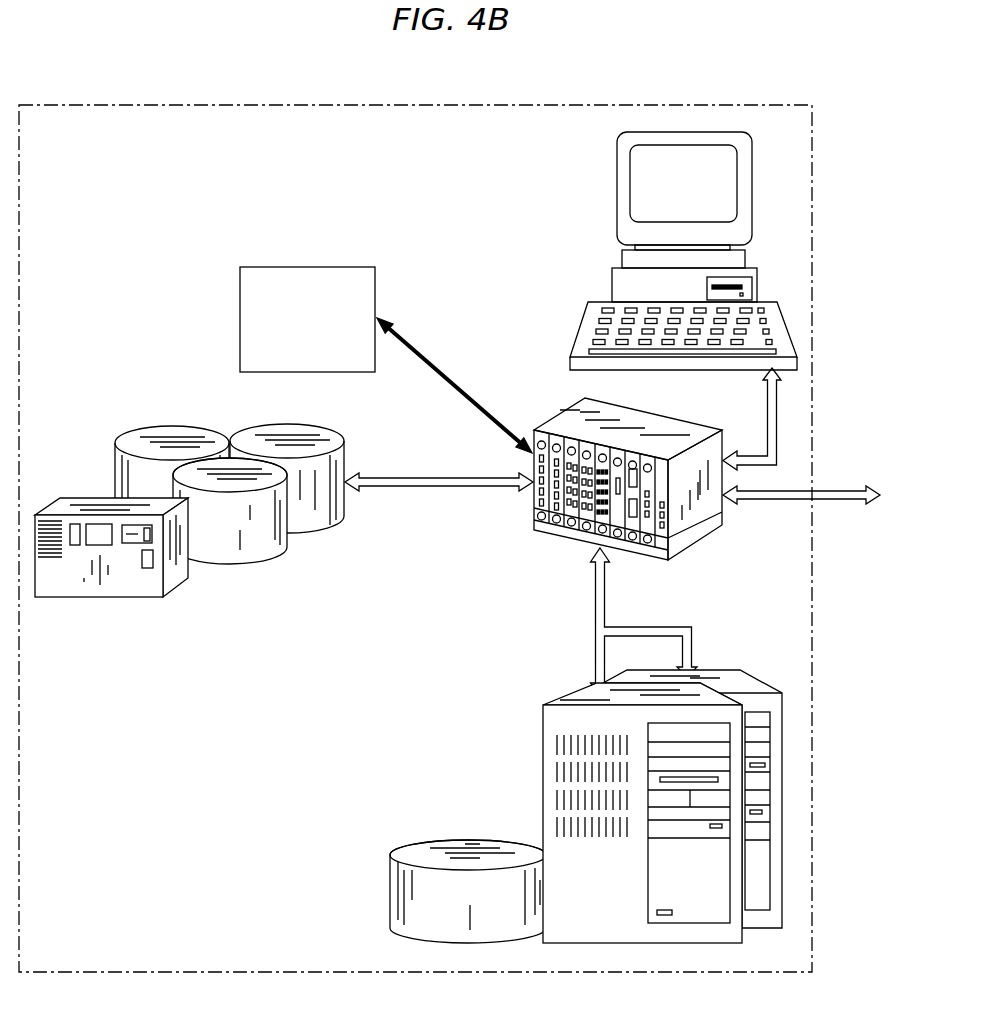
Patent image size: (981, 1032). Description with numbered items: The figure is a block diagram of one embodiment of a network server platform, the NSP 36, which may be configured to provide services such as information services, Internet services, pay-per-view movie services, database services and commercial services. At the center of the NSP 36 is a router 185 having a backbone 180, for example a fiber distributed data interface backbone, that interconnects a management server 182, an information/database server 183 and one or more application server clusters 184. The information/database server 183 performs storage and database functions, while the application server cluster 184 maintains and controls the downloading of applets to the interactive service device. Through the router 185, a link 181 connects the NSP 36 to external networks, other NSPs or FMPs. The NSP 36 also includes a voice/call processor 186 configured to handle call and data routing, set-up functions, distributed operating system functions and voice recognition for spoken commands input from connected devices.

The NSP 36 is at (83, 74).
The backbone 180 is at (382, 474).
The link 181 is at (823, 488).
The management server 182 is at (617, 206).
The information/database server 183 is at (100, 598).
The application server cluster 184 is at (555, 943).
The router 185 is at (710, 535).
The voice/call processor 186 is at (375, 284).